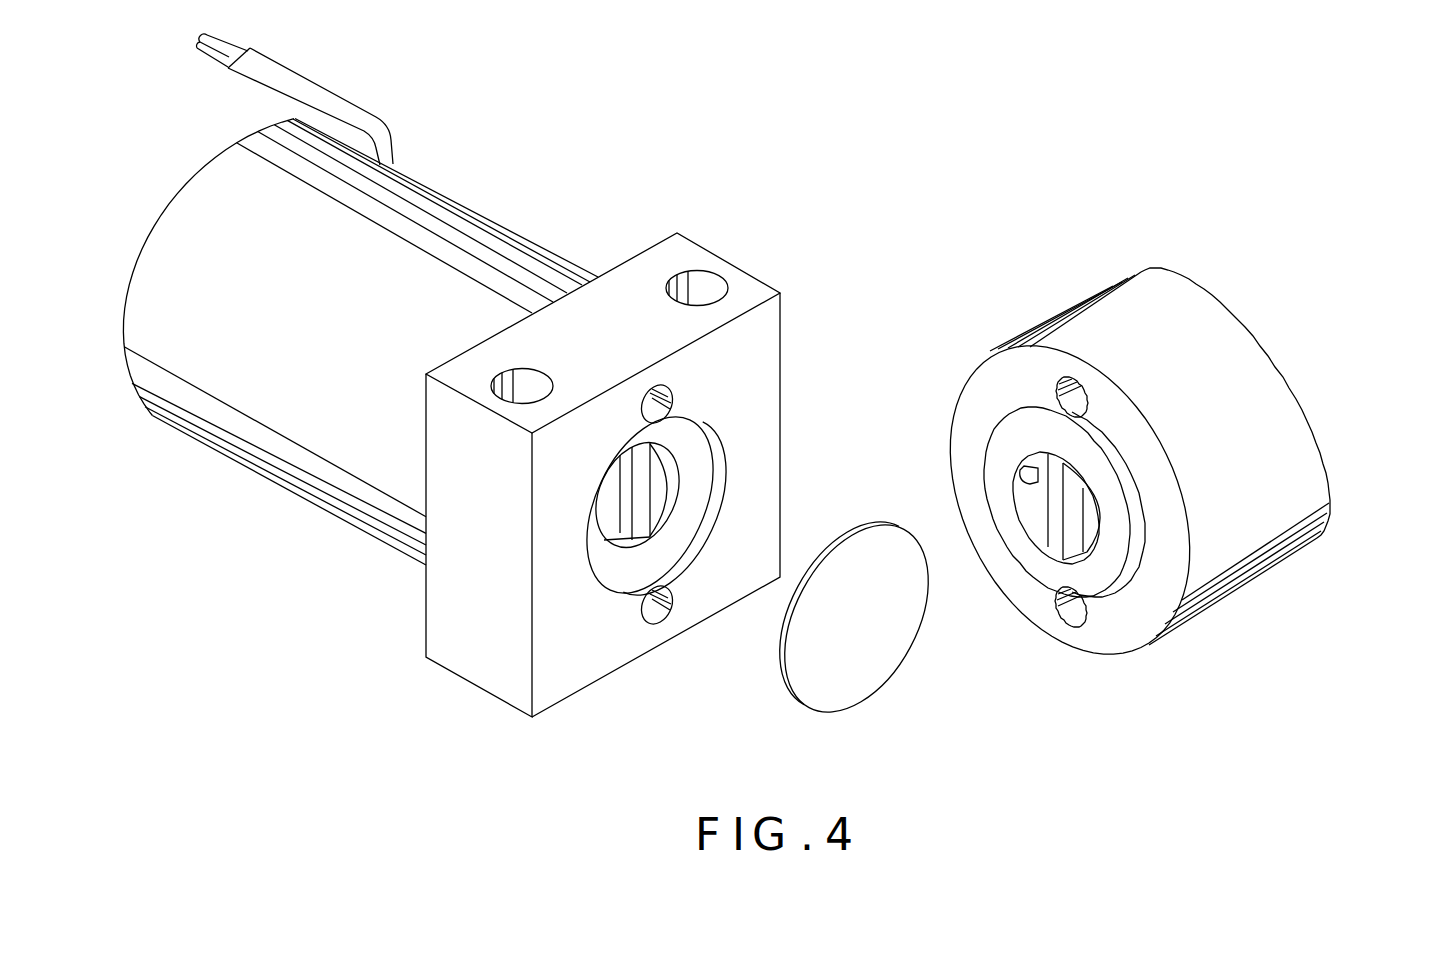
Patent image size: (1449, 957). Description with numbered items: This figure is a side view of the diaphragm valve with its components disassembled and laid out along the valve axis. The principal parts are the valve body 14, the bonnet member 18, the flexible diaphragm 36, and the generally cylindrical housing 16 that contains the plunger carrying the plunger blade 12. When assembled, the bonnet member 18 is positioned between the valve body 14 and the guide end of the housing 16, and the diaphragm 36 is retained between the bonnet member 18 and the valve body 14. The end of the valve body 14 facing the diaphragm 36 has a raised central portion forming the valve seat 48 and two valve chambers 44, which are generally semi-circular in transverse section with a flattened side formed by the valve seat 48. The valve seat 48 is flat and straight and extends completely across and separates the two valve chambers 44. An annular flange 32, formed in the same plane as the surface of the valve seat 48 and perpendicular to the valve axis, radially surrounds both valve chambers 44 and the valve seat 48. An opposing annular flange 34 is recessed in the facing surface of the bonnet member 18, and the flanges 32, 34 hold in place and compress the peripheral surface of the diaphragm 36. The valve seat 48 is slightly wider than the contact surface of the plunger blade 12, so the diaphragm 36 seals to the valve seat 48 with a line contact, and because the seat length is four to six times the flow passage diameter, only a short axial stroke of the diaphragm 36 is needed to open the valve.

The plunger blade 12 is at (645, 488).
The valve body 14 is at (1250, 568).
The housing 16 is at (283, 459).
The bonnet member 18 is at (465, 652).
The annular flange 32 is at (1005, 463).
The opposing annular flange 34 is at (612, 568).
The flexible diaphragm 36 is at (865, 658).
The valve chambers 44 is at (1040, 495).
The valve seat 48 is at (1055, 547).